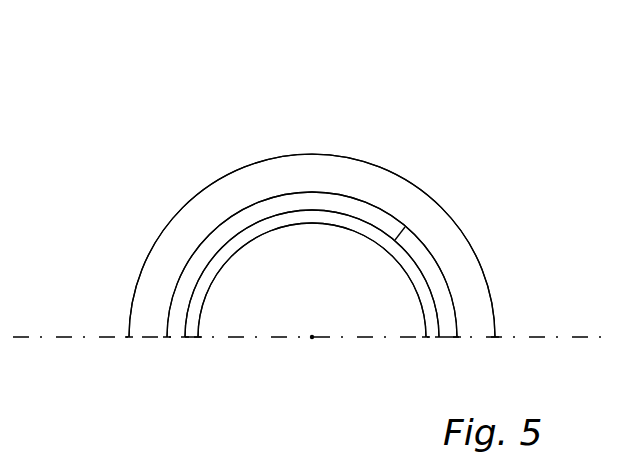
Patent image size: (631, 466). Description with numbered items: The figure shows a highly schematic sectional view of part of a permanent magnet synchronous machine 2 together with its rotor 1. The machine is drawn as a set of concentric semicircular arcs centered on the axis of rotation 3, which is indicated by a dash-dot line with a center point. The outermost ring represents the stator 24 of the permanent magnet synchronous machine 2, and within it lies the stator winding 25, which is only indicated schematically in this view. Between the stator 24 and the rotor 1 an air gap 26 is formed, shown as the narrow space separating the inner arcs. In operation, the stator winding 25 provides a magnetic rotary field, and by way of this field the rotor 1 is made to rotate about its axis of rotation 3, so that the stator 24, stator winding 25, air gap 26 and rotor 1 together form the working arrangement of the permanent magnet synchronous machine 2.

The rotor 1 is at (346, 251).
The permanent magnet synchronous machine 2 is at (160, 175).
The axis of rotation 3 is at (313, 338).
The stator 24 is at (330, 168).
The stator winding 25 is at (260, 217).
The air gap 26 is at (422, 275).